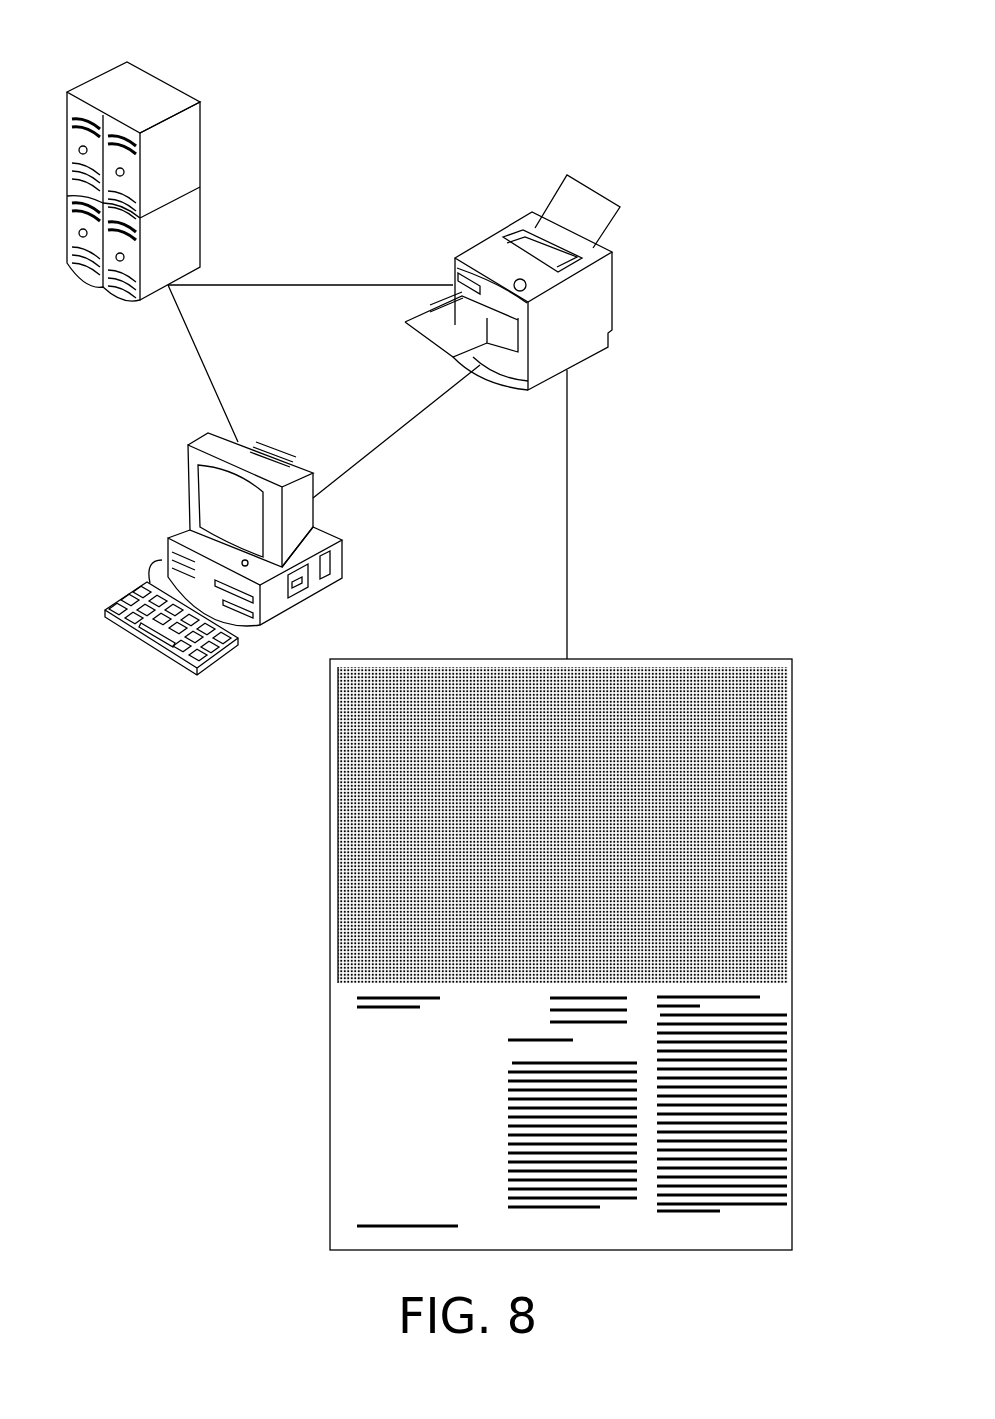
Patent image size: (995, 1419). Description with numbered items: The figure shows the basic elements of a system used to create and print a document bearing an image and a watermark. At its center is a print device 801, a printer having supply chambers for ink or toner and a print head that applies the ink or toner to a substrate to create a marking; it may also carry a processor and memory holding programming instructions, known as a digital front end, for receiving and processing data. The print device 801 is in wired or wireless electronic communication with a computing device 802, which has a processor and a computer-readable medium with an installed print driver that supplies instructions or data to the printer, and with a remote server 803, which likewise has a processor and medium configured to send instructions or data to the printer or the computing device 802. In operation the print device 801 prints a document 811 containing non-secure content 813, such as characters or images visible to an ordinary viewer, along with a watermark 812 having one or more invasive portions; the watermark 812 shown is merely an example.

The print device 801 is at (615, 288).
The computing device 802 is at (303, 603).
The remote server 803 is at (95, 80).
The document 811 is at (662, 658).
The watermark 812 is at (742, 700).
The non-secure content 813 is at (337, 852).